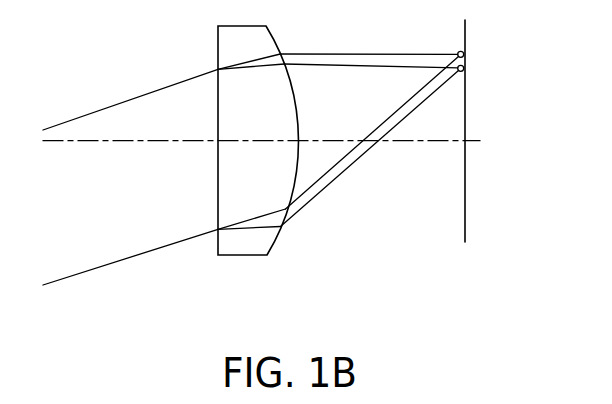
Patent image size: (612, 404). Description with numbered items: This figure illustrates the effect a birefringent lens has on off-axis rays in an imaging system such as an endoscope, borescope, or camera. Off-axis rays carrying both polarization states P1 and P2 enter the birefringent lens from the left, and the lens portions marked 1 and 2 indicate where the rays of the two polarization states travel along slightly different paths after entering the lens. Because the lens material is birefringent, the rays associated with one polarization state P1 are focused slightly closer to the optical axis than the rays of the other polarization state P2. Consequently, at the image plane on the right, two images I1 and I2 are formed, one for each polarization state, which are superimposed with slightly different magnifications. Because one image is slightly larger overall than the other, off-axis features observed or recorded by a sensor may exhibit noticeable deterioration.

The lens 1 is at (262, 140).
The lens portion 2 is at (252, 134).
The polarization state P1 is at (116, 176).
The polarization state P2 is at (87, 162).
The image I1 is at (386, 143).
The image I2 is at (384, 124).